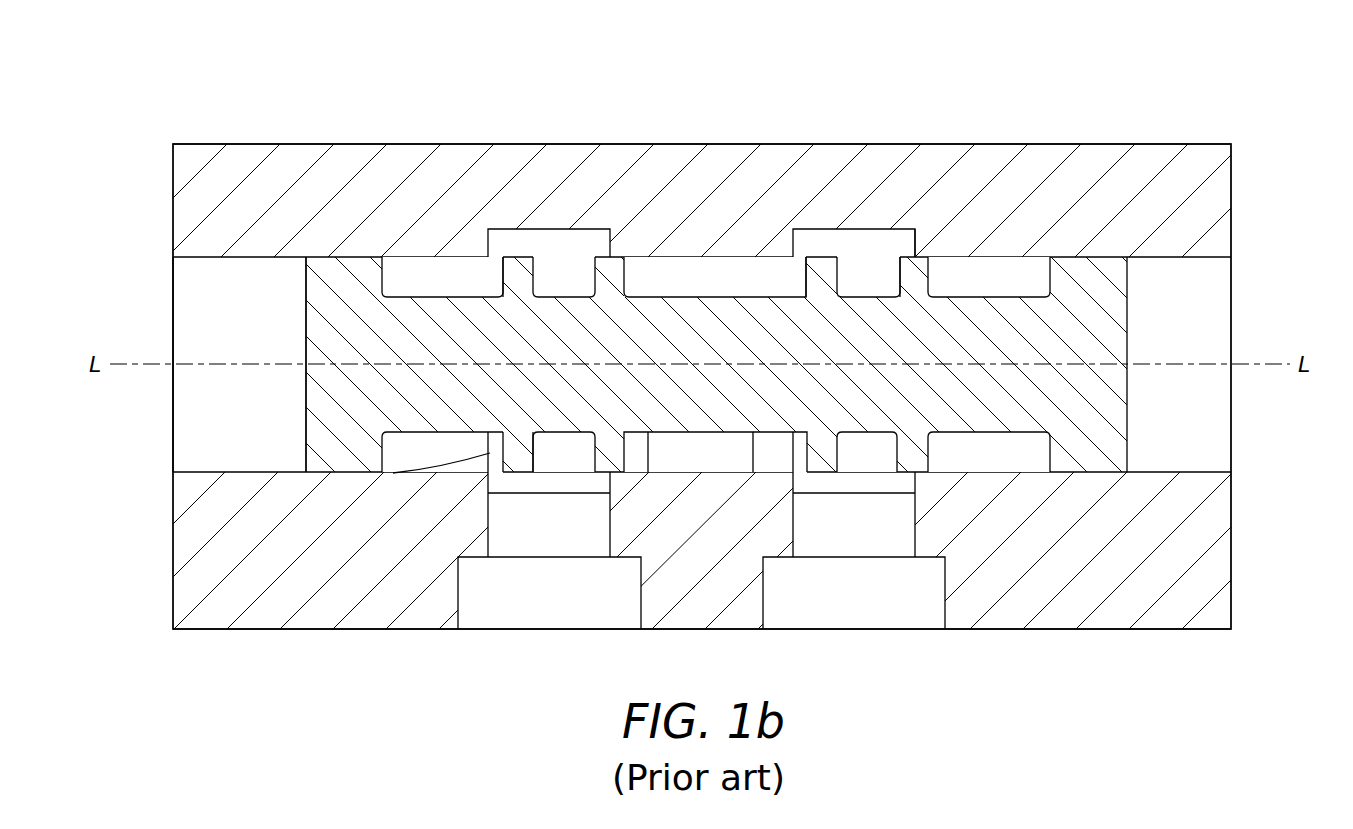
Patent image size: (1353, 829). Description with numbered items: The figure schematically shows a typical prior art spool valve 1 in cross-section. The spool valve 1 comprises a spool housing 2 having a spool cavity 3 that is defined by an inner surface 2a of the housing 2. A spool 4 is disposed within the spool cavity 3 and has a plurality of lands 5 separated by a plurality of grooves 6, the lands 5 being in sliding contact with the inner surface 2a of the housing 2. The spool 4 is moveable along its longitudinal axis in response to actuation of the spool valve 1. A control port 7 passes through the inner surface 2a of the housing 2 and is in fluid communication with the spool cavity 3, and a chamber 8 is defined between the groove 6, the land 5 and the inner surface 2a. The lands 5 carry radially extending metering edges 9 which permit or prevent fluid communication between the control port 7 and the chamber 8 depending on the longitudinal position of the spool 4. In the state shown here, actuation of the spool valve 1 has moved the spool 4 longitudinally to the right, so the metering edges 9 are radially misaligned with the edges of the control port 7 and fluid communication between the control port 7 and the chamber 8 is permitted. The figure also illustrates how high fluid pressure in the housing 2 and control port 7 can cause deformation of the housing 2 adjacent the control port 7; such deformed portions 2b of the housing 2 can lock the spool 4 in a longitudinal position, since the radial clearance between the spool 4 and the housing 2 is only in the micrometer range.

The spool valve 1 is at (158, 76).
The spool housing 2 is at (702, 360).
The inner surface 2a is at (442, 257).
The deformed portions 2b is at (450, 458).
The spool cavity 3 is at (185, 286).
The spool 4 is at (712, 335).
The lands 5 is at (917, 258).
The grooves 6 is at (990, 295).
The control port 7 is at (595, 617).
The chamber 8 is at (407, 453).
The metering edges 9 is at (503, 460).